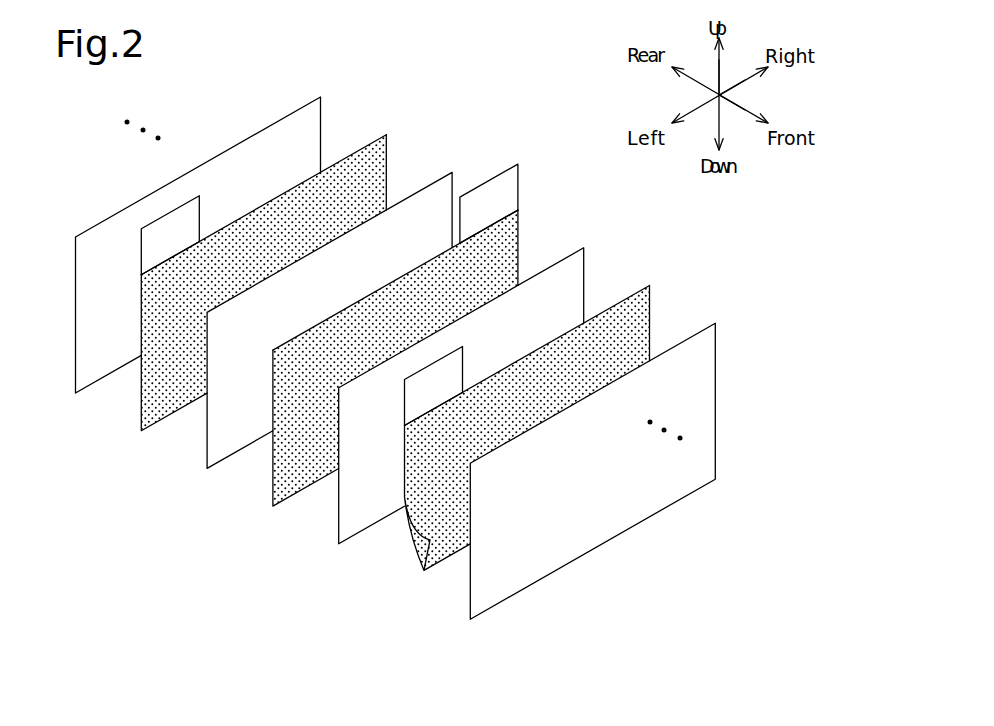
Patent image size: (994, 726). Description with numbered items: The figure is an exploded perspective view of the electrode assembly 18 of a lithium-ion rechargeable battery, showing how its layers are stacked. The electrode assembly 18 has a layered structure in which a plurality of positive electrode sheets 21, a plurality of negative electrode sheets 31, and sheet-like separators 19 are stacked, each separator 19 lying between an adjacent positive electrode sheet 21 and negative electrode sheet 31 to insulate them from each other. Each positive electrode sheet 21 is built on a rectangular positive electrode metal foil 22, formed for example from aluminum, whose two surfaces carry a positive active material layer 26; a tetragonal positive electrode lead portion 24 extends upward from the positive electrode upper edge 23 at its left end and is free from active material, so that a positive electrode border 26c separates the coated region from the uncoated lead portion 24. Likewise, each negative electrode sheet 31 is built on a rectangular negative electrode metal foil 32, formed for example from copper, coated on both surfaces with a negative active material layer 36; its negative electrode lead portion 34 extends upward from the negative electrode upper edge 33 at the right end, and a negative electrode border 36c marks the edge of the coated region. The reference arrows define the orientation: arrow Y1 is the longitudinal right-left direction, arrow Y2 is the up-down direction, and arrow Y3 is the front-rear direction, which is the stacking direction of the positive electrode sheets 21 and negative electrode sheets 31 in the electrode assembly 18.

The electrode assembly 18 is at (592, 120).
The separator 19 is at (315, 114).
The positive electrode sheet 21 is at (387, 140).
The positive electrode metal foil 22 is at (237, 237).
The positive electrode upper edge 23 is at (275, 198).
The positive electrode lead portion 24 is at (150, 247).
The positive active material layer 26 is at (145, 414).
The positive electrode border 26c is at (173, 253).
The negative electrode sheet 31 is at (518, 237).
The negative electrode metal foil 32 is at (337, 327).
The negative electrode upper edge 33 is at (378, 288).
The negative electrode lead portion 34 is at (518, 196).
The negative active material layer 36 is at (278, 488).
The negative electrode border 36c is at (478, 233).
The arrow Y1 is at (740, 78).
The arrow Y2 is at (718, 68).
The arrow Y3 is at (747, 107).